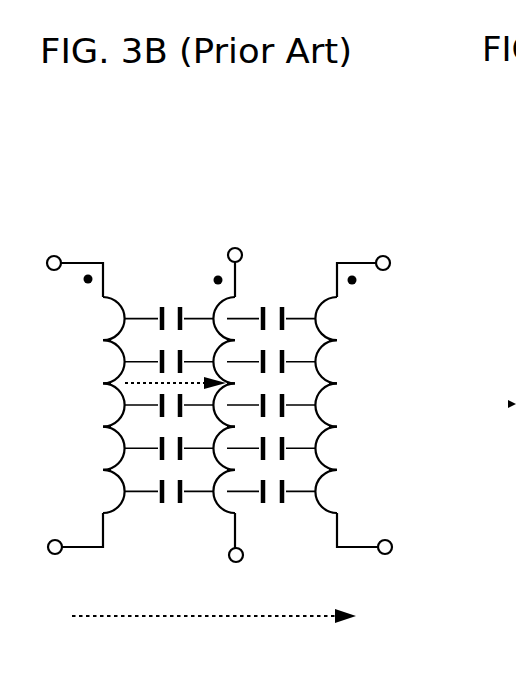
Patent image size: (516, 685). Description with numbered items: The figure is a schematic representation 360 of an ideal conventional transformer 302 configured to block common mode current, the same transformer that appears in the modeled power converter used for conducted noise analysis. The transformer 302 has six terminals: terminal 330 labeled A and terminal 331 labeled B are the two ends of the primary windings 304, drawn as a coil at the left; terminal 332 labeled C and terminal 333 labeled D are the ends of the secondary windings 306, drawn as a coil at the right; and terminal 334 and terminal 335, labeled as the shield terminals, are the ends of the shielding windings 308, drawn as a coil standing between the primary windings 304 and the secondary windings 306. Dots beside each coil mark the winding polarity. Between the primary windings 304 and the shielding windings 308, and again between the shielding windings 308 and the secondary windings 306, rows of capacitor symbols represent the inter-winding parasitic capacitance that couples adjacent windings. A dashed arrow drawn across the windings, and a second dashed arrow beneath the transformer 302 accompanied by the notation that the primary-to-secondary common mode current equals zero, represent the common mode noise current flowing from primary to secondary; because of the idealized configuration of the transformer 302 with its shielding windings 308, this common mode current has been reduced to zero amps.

The schematic representation 360 is at (97, 108).
The transformer 302 is at (138, 226).
The primary windings 304 is at (103, 470).
The secondary windings 306 is at (337, 470).
The shielding windings 308 is at (214, 511).
The terminal 330 is at (55, 540).
The terminal 331 is at (54, 270).
The terminal 332 is at (390, 262).
The terminal 333 is at (392, 546).
The terminal 334 is at (242, 252).
The terminal 335 is at (243, 555).